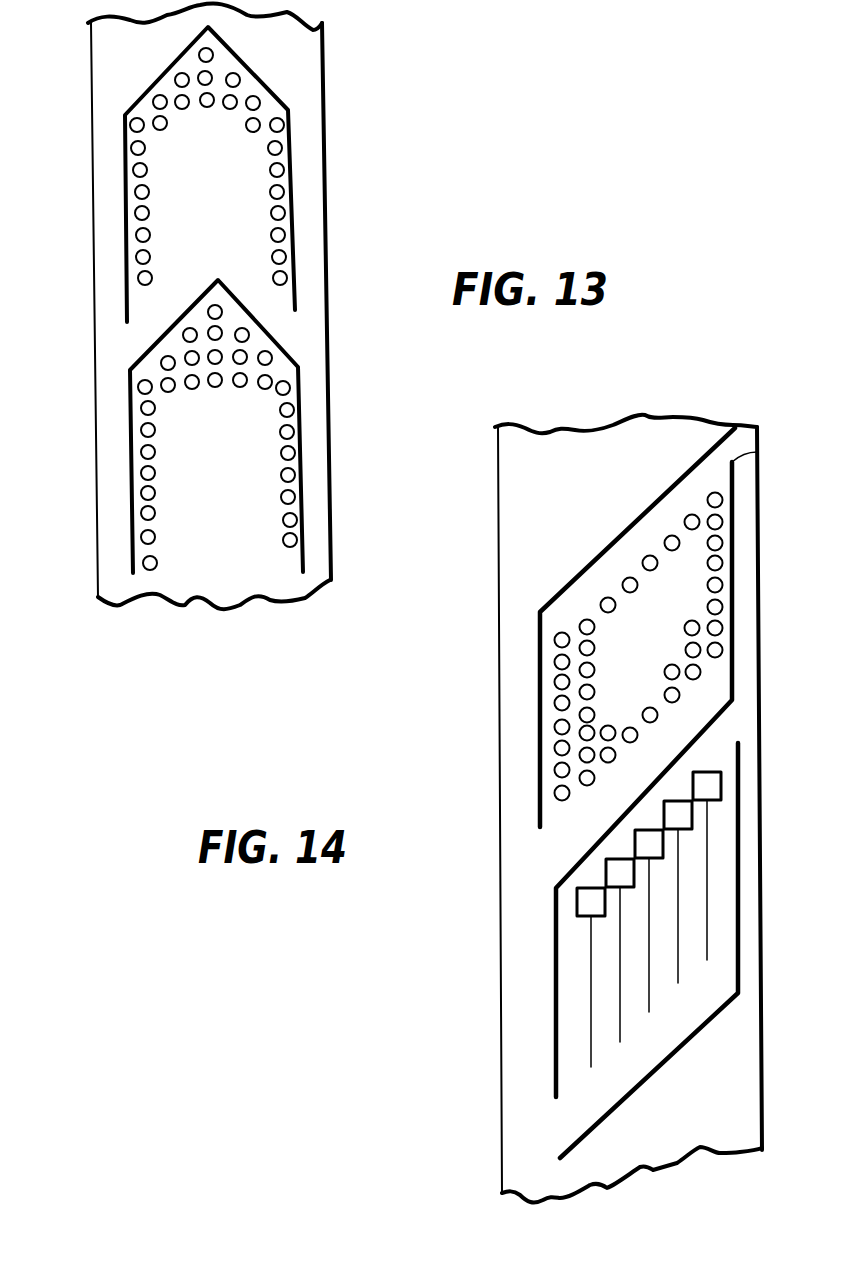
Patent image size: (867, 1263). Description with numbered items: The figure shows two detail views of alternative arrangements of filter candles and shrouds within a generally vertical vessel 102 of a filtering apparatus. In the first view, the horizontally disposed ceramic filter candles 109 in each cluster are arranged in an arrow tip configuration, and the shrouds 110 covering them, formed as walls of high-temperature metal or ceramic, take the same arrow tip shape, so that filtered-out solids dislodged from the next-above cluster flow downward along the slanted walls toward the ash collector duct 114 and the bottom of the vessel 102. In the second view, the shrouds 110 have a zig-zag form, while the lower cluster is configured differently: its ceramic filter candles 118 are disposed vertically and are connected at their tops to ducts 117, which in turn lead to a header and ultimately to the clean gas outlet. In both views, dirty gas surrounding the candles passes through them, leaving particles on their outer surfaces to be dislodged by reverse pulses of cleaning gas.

In FIG. 13, the vessel 102 is at (327, 283).
In FIG. 14, the vessel 102 is at (762, 1005).
In FIG. 13, the filter candles 109 is at (130, 142).
In FIG. 14, the filter candles 109 is at (720, 630).
In FIG. 13, the shrouds 110 is at (272, 93).
In FIG. 14, the shrouds 110 is at (758, 447).
In FIG. 13, the ash collector duct 114 is at (107, 256).
In FIG. 14, the ducts 117 is at (676, 810).
In FIG. 14, the ceramic filter candles 118 is at (650, 917).